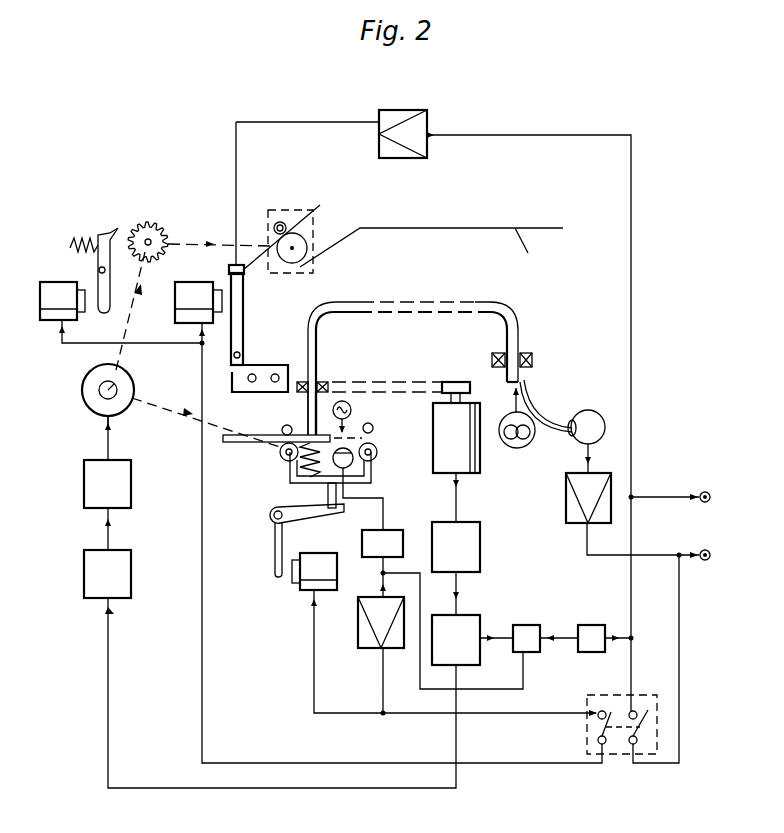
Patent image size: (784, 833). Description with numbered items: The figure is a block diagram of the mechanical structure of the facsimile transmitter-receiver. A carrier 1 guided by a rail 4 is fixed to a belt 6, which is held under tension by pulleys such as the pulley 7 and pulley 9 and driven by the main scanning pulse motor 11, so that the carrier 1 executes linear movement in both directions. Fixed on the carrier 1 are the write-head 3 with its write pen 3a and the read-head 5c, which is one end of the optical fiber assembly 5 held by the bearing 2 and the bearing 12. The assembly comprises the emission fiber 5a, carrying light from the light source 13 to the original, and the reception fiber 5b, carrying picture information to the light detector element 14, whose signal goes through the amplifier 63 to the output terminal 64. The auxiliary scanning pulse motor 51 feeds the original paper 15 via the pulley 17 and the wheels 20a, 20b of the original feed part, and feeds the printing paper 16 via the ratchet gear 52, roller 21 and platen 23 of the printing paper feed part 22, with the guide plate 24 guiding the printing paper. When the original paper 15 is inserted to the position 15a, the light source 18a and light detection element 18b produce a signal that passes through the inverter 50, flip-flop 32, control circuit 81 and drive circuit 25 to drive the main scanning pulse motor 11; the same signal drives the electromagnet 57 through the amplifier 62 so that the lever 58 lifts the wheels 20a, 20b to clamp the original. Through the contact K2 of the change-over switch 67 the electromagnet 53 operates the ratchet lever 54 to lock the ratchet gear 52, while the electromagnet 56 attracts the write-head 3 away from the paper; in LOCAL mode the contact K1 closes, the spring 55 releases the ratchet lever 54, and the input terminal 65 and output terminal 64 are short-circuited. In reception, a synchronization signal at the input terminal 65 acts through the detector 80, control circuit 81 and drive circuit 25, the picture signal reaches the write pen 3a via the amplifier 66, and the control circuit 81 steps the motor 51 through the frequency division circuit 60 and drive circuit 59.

The carrier 1 is at (275, 370).
The bearing 2 is at (328, 382).
The write-head 3 is at (244, 323).
The write pen 3a is at (255, 285).
The rail 4 is at (248, 378).
The optical fiber assembly 5 is at (320, 333).
The emission fiber 5a is at (500, 380).
The reception fiber 5b is at (558, 400).
The read-head 5c is at (308, 400).
The belt 6 is at (404, 382).
The pulley 7 is at (458, 382).
The pulley 9 is at (328, 496).
The main scanning pulse motor 11 is at (480, 456).
The bearing 12 is at (530, 353).
The light source 13 is at (532, 443).
The light detector element 14 is at (604, 422).
The original paper 15 is at (228, 443).
The original insertion position 15a is at (374, 430).
The printing paper 16 is at (334, 248).
The pulley 17 is at (98, 392).
The light source 18a is at (352, 410).
The light detection element 18b is at (371, 475).
The original feed wheel 20a is at (285, 460).
The original feed wheel 20b is at (377, 454).
The roller 21 is at (274, 228).
The printing paper feed part 22 is at (287, 210).
The platen 23 is at (303, 269).
The guide plate 24 is at (380, 232).
The drive circuit 25 is at (480, 547).
The flip-flop 32 is at (536, 653).
The inverter 50 is at (394, 530).
The auxiliary scanning pulse motor 51 is at (100, 404).
The ratchet gear 52 is at (158, 226).
The electromagnet 53 is at (58, 283).
The ratchet lever 54 is at (108, 228).
The spring 55 is at (74, 240).
The electromagnet 56 is at (175, 300).
The electromagnet 57 is at (322, 562).
The lever 58 is at (272, 562).
The drive circuit 59 is at (131, 484).
The frequency division circuit 60 is at (131, 574).
The amplifier 62 is at (358, 642).
The amplifier 63 is at (566, 497).
The output terminal 64 is at (694, 538).
The input terminal 65 is at (702, 492).
The amplifier 66 is at (410, 110).
The change-over switch 67 is at (615, 695).
The detector 80 is at (590, 625).
The control circuit 81 is at (470, 615).
The contact K1 is at (626, 748).
The contact K2 is at (590, 735).